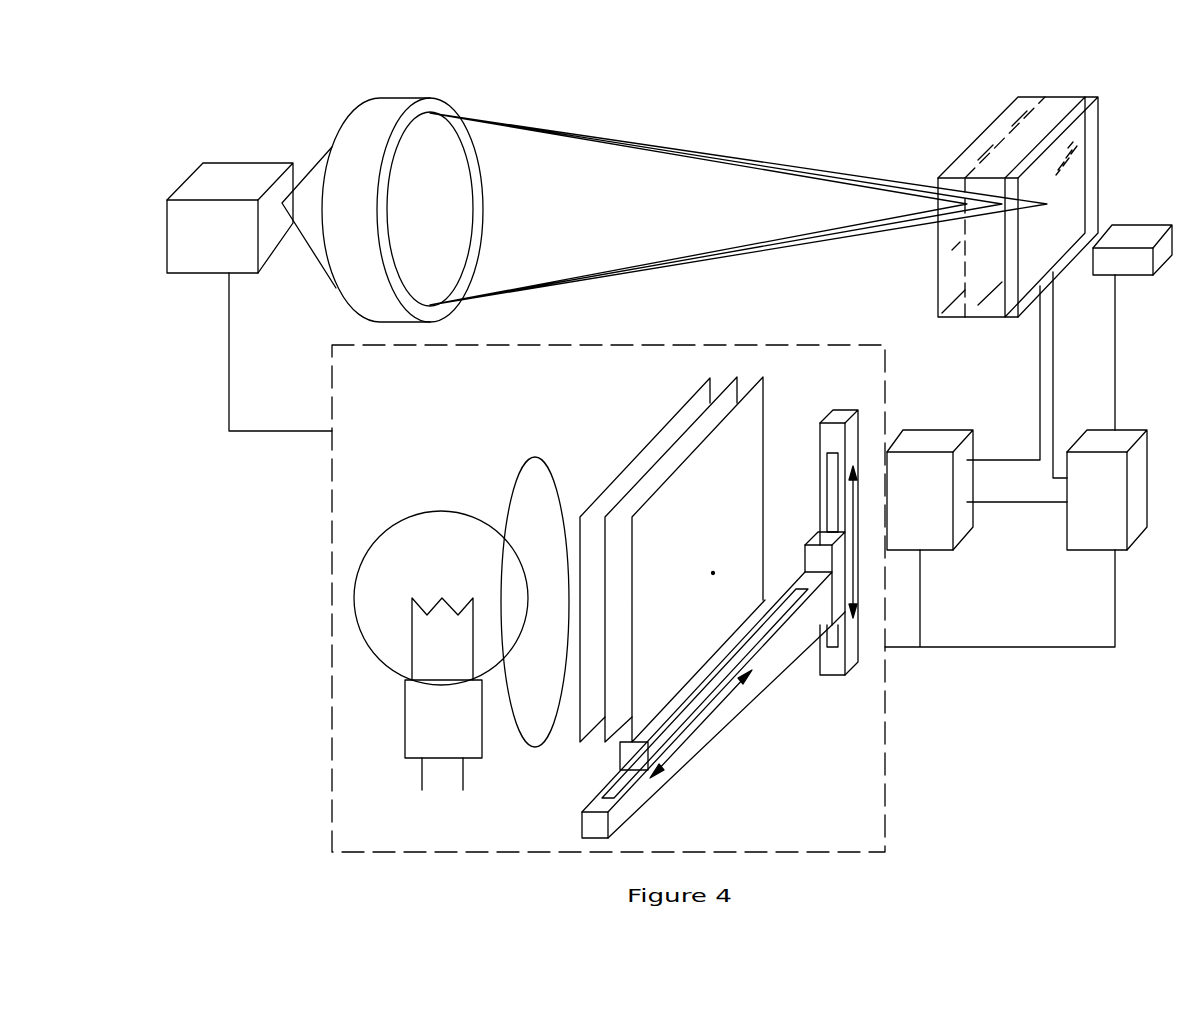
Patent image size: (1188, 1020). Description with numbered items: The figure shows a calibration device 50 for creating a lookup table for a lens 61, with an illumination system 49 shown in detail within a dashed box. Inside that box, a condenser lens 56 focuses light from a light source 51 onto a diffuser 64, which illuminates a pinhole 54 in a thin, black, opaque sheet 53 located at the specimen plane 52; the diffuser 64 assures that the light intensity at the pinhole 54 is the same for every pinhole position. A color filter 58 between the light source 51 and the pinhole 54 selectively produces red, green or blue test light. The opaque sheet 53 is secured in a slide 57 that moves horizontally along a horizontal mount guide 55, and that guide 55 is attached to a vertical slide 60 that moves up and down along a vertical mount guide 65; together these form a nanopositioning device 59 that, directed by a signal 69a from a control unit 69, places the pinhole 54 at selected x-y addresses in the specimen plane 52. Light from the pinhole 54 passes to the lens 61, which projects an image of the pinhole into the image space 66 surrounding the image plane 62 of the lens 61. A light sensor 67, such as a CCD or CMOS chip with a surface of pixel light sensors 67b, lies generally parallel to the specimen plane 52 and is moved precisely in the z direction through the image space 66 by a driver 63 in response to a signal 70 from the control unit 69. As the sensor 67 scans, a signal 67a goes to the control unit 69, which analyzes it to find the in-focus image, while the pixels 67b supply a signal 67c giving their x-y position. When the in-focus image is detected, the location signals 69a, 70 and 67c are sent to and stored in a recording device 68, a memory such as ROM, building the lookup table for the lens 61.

The illumination system 49 is at (236, 184).
The calibration device 50 is at (680, 78).
The light source 51 is at (397, 548).
The specimen plane 52 is at (719, 555).
The opaque sheet 53 is at (757, 450).
The pinhole 54 is at (711, 573).
The horizontal mount guide 55 is at (765, 658).
The condenser lens 56 is at (530, 492).
The slide 57 is at (664, 740).
The color filter 58 is at (688, 425).
The nanopositioning device 59 is at (758, 744).
The vertical slide 60 is at (825, 540).
The lens 61 is at (383, 106).
The image plane 62 is at (1036, 102).
The driver 63 is at (1137, 233).
The diffuser 64 is at (630, 460).
The vertical mount guide 65 is at (838, 417).
The image space 66 is at (978, 147).
The light sensor 67 is at (1080, 100).
The signal 67a is at (1053, 426).
The light sensors 67b is at (1100, 97).
The signal 67c is at (1040, 386).
The recording device 68 is at (922, 438).
The control unit 69 is at (1095, 539).
The signal 69a is at (1008, 647).
The signal 70 is at (1115, 356).